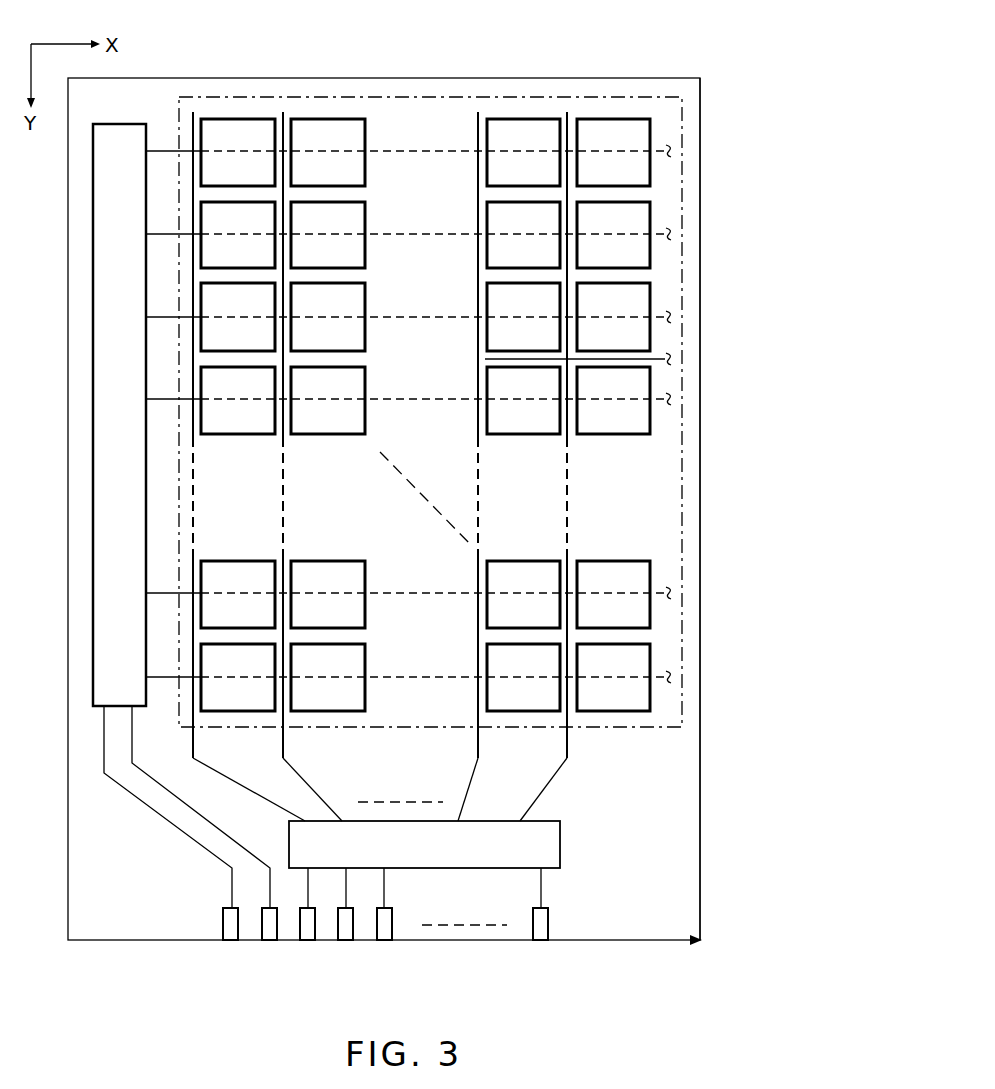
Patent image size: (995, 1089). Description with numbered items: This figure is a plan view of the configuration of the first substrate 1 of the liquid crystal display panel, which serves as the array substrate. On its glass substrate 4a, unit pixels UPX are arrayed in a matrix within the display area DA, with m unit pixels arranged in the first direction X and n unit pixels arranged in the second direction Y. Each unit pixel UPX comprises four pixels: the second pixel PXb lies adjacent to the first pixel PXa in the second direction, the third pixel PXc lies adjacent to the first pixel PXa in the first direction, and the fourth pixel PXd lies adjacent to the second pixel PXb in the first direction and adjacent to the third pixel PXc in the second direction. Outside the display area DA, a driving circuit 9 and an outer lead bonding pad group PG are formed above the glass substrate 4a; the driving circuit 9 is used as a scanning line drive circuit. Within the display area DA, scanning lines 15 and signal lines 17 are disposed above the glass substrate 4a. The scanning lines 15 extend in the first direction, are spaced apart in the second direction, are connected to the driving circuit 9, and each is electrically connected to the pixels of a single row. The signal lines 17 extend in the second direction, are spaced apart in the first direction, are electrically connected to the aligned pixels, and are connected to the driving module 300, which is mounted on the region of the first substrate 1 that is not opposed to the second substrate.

The first substrate 1 is at (705, 73).
The glass substrate 4a is at (692, 88).
The driving circuit 9 is at (93, 508).
The scanning line 15 is at (164, 153).
The signal line 17 is at (185, 106).
The driving module 300 is at (560, 845).
The display area DA is at (409, 103).
The outer lead bonding pad group PG is at (388, 957).
The first pixel PXa is at (560, 128).
The second pixel PXb is at (560, 214).
The third pixel PXc is at (650, 167).
The fourth pixel PXd is at (650, 255).
The unit pixel UPX is at (757, 110).